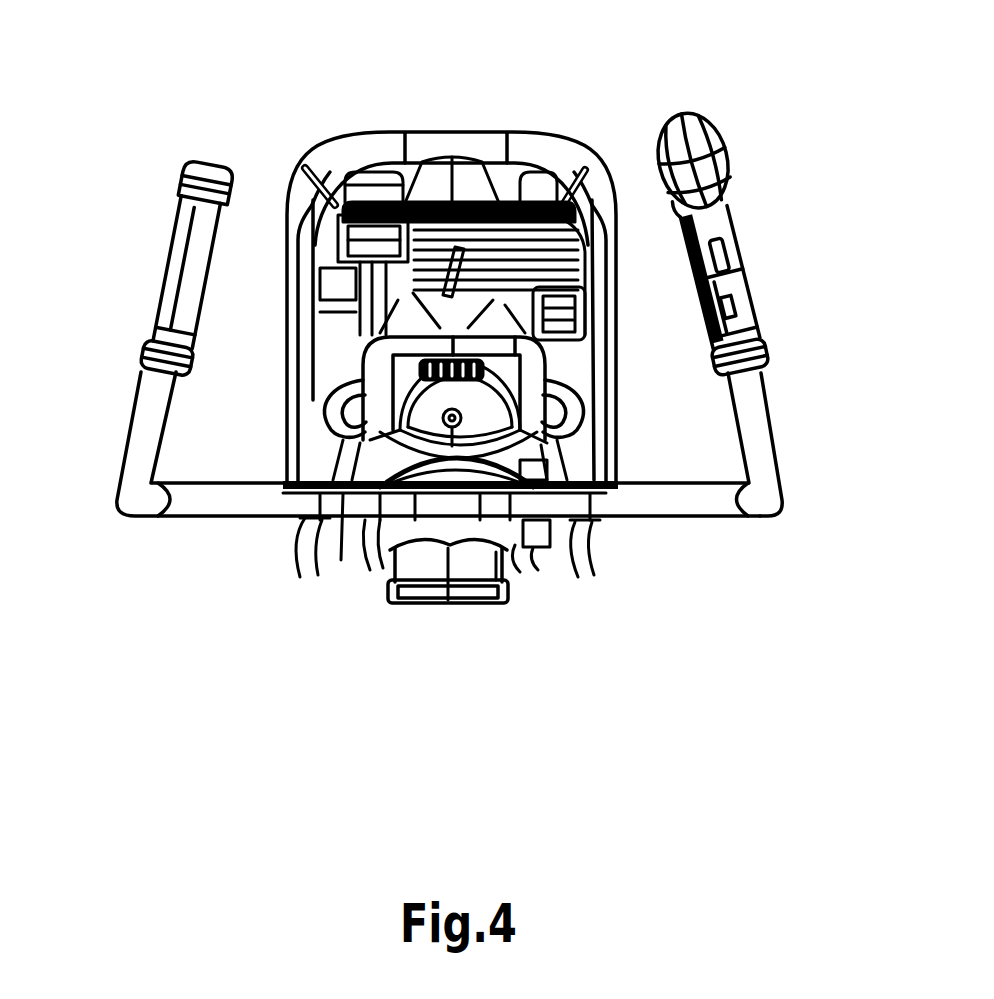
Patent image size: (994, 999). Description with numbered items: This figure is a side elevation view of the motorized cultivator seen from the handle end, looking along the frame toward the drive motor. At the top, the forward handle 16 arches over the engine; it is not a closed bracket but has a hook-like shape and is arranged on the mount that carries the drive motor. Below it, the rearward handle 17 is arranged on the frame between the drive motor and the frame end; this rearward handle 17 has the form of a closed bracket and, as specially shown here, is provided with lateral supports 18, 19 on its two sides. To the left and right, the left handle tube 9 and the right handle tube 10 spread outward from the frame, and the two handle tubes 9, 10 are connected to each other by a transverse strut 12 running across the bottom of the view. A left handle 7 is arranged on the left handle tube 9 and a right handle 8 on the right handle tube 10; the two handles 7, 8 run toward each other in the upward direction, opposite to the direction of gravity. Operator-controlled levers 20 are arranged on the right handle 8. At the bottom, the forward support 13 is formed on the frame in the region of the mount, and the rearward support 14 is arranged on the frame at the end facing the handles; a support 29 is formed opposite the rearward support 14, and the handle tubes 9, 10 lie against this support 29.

The left handle 7 is at (183, 232).
The right handle 8 is at (722, 140).
The left handle tube 9 is at (152, 423).
The right handle tube 10 is at (752, 440).
The transverse strut 12 is at (345, 506).
The forward support 13 is at (436, 606).
The rearward support 14 is at (497, 542).
The forward handle 16 is at (470, 134).
The rearward handle 17 is at (352, 345).
The lateral support 18 is at (322, 407).
The lateral support 19 is at (582, 405).
The operator-controlled levers 20 is at (730, 225).
The support 29 is at (477, 602).